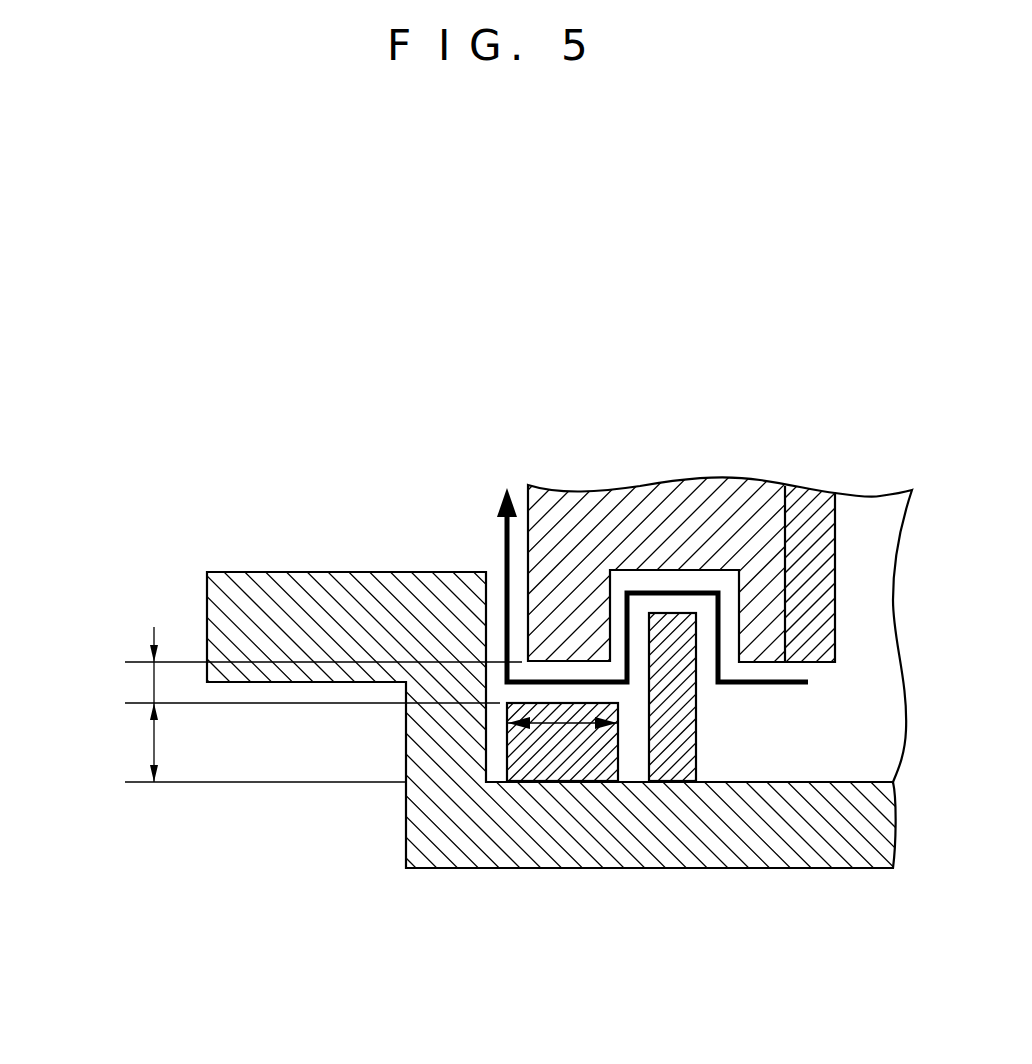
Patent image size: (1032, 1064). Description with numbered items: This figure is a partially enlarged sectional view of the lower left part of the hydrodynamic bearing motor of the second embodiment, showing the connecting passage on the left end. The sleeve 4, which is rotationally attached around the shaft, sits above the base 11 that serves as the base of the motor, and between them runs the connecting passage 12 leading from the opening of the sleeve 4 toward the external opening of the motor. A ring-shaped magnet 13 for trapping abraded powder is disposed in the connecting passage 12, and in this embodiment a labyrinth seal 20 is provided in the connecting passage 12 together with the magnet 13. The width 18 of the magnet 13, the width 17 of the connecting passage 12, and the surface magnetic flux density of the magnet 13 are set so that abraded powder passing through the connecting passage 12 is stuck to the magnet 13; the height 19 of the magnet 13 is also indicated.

The sleeve 4 is at (668, 513).
The base 11 is at (470, 822).
The connecting passage 12 is at (505, 547).
The magnet for trapping abraded powder 13 is at (552, 765).
The width of the connecting passage 17 is at (154, 682).
The width of the magnet for trapping abraded powder 18 is at (572, 723).
The height of the magnet for trapping abraded powder 19 is at (154, 737).
The labyrinth seal 20 is at (673, 762).